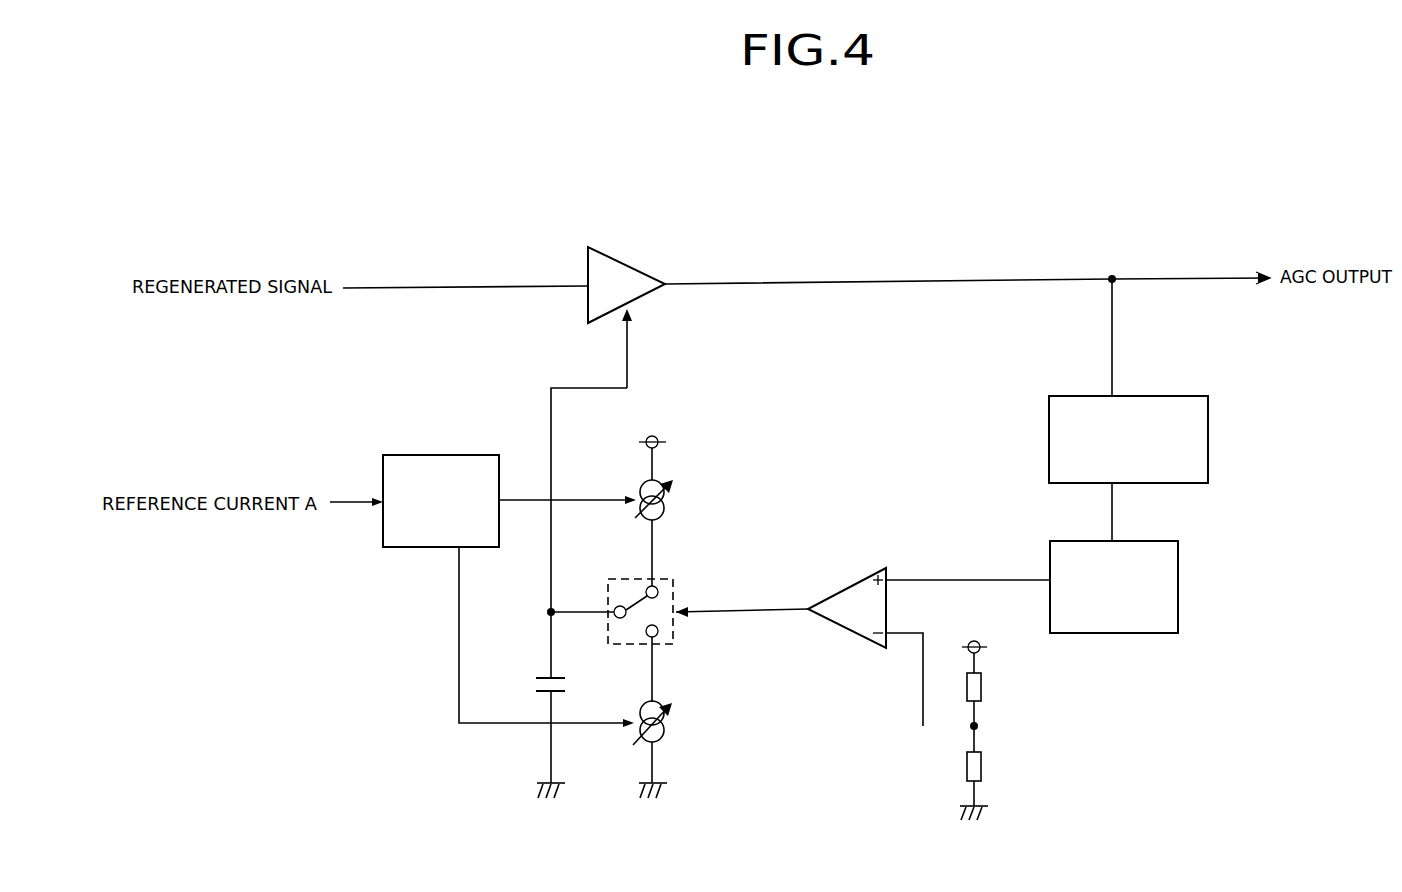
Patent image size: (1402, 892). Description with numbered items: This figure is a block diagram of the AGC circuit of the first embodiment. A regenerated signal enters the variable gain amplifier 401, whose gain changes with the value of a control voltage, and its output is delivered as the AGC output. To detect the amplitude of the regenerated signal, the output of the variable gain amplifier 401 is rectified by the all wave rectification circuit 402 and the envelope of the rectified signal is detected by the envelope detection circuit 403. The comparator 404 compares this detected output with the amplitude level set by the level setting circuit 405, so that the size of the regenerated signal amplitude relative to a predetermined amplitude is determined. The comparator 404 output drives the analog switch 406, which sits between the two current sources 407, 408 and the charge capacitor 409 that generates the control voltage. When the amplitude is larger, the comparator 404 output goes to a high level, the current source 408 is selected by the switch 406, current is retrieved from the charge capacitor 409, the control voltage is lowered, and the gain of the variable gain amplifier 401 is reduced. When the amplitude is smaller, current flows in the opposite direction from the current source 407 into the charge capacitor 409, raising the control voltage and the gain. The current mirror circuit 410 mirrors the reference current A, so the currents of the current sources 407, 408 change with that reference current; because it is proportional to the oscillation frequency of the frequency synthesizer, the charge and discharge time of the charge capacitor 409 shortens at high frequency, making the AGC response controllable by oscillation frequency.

The variable gain amplifier 401 is at (732, 292).
The all wave rectification circuit 402 is at (1128, 381).
The envelope detection circuit 403 is at (1125, 558).
The comparator 404 is at (863, 630).
The level setting circuit 405 is at (1091, 730).
The analog switch 406 is at (638, 611).
The current source 407 is at (615, 480).
The current source 408 is at (598, 672).
The charge capacitor 409 is at (560, 593).
The current mirror circuit 410 is at (441, 489).